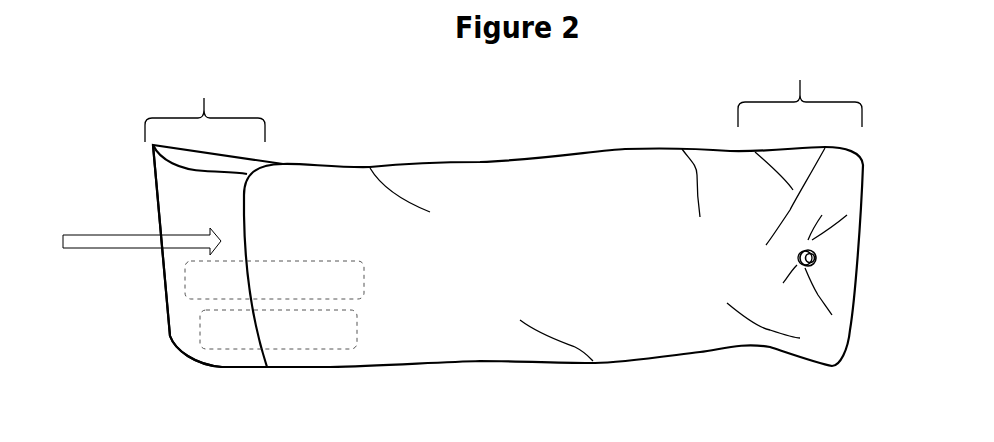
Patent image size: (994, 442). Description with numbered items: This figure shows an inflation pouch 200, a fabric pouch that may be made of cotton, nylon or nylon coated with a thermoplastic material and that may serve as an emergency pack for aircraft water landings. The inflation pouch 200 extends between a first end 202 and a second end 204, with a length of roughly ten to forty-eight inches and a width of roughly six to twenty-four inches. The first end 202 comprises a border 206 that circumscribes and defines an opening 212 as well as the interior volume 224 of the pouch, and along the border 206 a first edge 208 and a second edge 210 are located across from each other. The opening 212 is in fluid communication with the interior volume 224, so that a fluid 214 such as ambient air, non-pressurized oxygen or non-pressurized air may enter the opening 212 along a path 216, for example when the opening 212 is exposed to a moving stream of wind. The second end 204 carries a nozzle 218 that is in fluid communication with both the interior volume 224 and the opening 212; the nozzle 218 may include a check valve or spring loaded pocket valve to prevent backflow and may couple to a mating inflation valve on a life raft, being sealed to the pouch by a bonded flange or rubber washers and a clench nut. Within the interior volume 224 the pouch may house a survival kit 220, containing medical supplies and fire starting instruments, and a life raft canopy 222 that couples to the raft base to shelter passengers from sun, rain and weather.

The inflation pouch 200 is at (463, 120).
The first end 202 is at (205, 101).
The second end 204 is at (800, 84).
The border 206 is at (222, 367).
The first edge 208 is at (160, 173).
The second edge 210 is at (244, 199).
The opening 212 is at (225, 219).
The fluid 214 is at (114, 219).
The path 216 is at (119, 240).
The nozzle 218 is at (820, 257).
The survival kit 220 is at (198, 278).
The life raft canopy 222 is at (208, 333).
The interior volume 224 is at (598, 237).